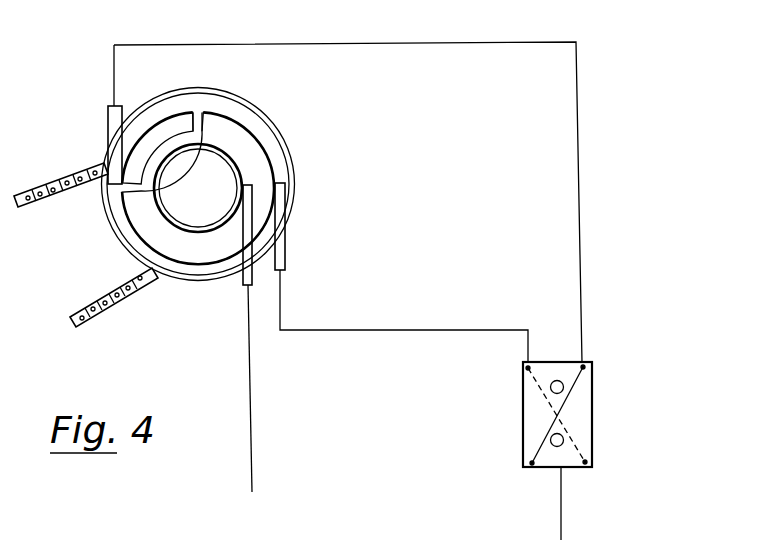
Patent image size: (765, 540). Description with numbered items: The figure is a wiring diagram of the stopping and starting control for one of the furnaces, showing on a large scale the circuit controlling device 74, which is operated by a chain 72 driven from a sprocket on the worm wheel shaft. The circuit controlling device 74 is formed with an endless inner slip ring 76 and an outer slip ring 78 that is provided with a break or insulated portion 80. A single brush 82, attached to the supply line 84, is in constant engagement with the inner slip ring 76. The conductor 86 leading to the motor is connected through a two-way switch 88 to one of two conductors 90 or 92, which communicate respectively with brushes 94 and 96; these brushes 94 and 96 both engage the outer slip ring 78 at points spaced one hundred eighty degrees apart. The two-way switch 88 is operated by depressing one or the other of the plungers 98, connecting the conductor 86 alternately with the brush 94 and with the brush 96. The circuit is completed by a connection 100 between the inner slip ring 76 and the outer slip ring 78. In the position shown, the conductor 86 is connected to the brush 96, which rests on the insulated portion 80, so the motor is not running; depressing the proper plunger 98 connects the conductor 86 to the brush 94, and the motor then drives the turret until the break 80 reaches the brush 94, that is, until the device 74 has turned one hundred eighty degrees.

The chain 72 is at (100, 312).
The circuit controlling device 74 is at (268, 119).
The inner slip ring 76 is at (193, 232).
The outer slip ring 78 is at (275, 163).
The break or insulated portion 80 is at (107, 192).
The single brush 82 is at (245, 282).
The supply line 84 is at (253, 465).
The conductor 86 is at (563, 525).
The two-way switch 88 is at (582, 403).
The conductor 90 is at (455, 329).
The conductor 92 is at (580, 207).
The brush 94 is at (285, 245).
The brush 96 is at (108, 118).
The plungers 98 is at (550, 390).
The connection 100 is at (193, 117).